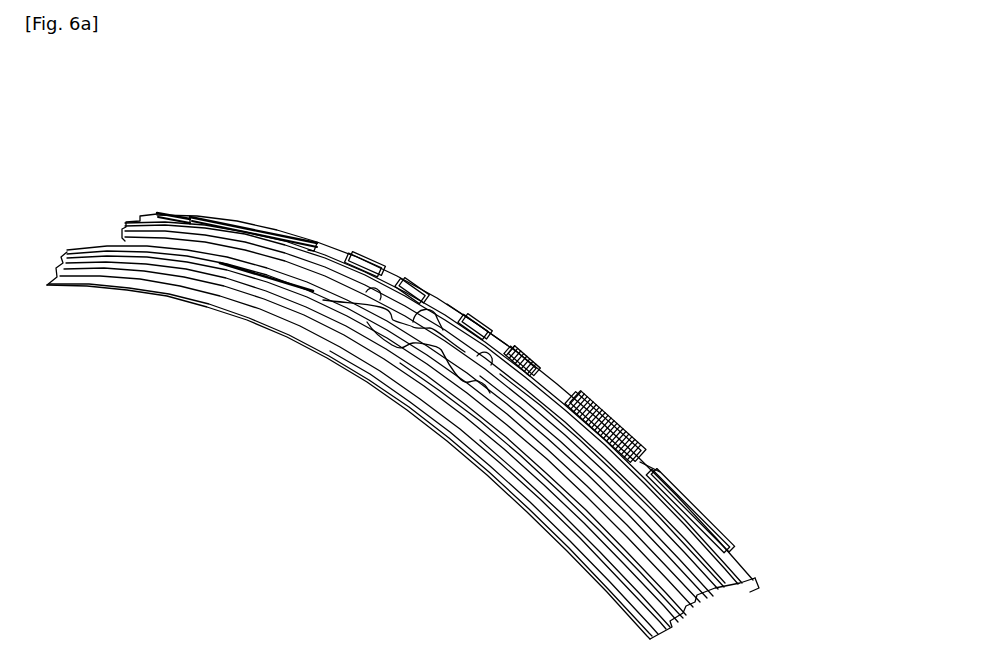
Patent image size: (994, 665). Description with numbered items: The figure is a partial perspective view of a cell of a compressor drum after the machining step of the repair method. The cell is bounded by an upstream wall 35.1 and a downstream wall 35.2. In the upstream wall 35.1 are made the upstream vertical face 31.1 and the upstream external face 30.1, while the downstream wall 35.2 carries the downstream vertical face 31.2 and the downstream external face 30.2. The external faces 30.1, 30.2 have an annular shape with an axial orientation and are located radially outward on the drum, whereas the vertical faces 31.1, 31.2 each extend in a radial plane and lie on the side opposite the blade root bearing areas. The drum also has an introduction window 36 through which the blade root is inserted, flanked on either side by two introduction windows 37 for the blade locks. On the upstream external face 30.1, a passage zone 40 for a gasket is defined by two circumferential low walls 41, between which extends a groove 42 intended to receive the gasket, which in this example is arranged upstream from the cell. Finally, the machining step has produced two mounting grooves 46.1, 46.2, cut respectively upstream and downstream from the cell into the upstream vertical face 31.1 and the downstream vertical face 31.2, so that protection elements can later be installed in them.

The upstream external face 30.1 is at (227, 220).
The downstream external face 30.2 is at (223, 270).
The upstream vertical face 31.1 is at (710, 515).
The downstream vertical face 31.2 is at (253, 313).
The upstream wall 35.1 is at (640, 470).
The downstream wall 35.2 is at (573, 493).
The introduction window 36 is at (430, 323).
The introduction windows for blade locks 37 is at (368, 258).
The passage zone 40 is at (332, 242).
The circumferential low walls 41 is at (200, 213).
The groove 42 is at (489, 326).
The mounting groove 46.1 is at (622, 412).
The mounting groove 46.2 is at (403, 387).